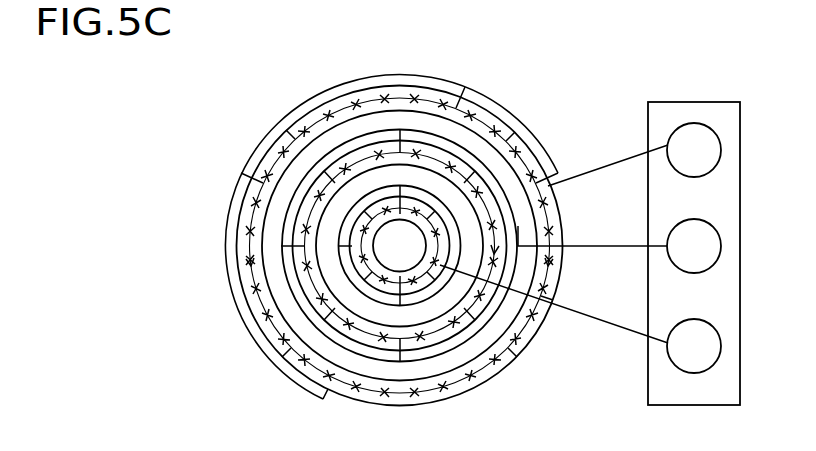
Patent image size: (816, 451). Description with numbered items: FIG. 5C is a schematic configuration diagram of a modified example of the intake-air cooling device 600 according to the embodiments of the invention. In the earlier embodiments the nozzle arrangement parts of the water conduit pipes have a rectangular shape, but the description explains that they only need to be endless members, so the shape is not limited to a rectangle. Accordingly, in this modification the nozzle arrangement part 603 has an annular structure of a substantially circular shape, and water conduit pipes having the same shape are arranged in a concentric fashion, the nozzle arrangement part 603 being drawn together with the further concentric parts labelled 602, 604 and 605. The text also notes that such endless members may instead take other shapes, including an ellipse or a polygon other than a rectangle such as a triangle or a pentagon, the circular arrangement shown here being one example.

The pump unit with ports P1, P2, P3 600 is at (652, 91).
The outer channel ring 602 is at (296, 127).
The nozzle arrangement part 603 is at (541, 185).
The channel assembly 604 is at (426, 225).
The outer wall arc 605 is at (583, 167).